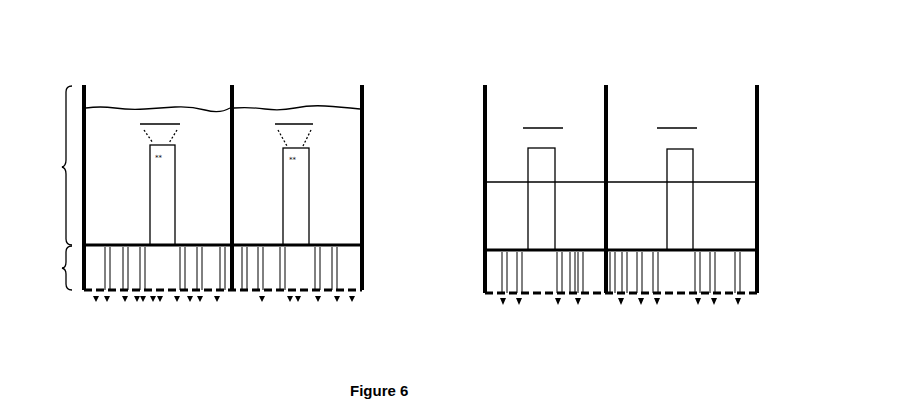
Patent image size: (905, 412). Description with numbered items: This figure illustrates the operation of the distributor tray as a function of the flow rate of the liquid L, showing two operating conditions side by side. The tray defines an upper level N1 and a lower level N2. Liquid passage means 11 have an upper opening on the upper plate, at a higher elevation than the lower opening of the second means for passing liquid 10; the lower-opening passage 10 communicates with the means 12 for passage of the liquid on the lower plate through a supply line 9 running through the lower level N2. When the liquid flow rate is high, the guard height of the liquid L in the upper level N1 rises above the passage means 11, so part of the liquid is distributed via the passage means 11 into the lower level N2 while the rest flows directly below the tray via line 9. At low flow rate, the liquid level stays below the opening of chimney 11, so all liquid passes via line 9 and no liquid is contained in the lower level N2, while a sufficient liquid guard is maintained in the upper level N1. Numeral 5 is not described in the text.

The liquid L is at (327, 153).
The outlet channels / pipes 5 is at (297, 298).
The supply line 9 is at (346, 278).
The second means for passing liquid 10 is at (738, 246).
The liquid passage means 11 is at (688, 206).
The means for passage of the liquid on lower plate 12 is at (740, 298).
The upper level N1 is at (50, 165).
The lower level N2 is at (50, 268).